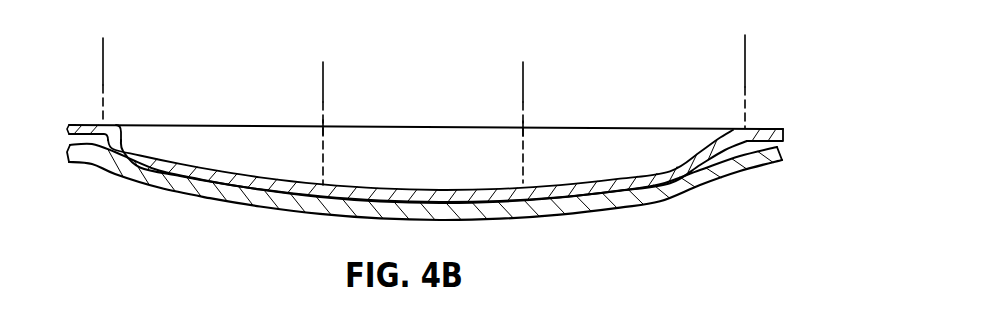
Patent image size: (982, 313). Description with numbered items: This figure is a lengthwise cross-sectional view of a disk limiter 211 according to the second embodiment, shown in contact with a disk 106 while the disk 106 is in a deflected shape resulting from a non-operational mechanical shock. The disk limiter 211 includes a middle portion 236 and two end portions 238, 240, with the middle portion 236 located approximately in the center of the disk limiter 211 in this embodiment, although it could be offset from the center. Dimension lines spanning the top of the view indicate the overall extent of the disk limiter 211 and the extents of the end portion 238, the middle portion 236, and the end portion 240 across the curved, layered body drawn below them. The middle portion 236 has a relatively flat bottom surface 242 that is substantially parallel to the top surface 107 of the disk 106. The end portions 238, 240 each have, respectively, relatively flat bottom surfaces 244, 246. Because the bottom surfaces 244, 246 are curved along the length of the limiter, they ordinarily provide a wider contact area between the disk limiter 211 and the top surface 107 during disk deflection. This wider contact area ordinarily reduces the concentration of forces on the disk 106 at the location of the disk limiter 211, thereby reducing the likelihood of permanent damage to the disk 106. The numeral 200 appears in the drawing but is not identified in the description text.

The liner shell 200 is at (783, 127).
The disk 106 is at (761, 168).
The top surface 107 is at (93, 144).
The bottom surface 244 is at (210, 187).
The bottom surface 242 is at (404, 200).
The bottom surface 246 is at (633, 188).
The disk limiter 211 is at (103, 46).
The end portion 238 is at (323, 79).
The middle portion 236 is at (523, 80).
The end portion 240 is at (523, 80).